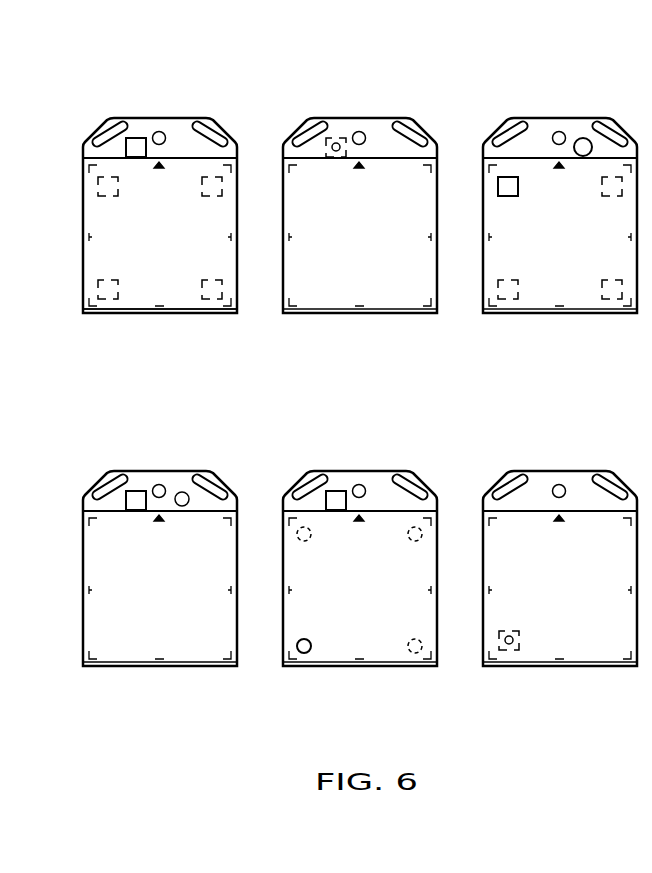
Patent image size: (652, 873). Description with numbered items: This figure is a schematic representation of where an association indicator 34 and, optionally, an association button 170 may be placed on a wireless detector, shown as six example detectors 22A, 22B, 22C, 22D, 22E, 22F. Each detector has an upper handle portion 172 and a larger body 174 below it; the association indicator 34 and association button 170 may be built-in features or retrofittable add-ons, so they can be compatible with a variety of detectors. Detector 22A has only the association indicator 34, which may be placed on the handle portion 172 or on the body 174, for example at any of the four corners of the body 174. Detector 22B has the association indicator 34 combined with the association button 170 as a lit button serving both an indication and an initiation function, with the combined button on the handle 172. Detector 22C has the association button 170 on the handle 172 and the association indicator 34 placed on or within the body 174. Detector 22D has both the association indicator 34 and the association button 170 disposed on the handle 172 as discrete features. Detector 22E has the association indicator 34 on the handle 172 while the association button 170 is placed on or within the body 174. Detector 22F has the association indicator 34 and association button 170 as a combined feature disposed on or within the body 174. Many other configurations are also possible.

The detector 22A is at (197, 107).
The detector 22B is at (392, 107).
The detector 22C is at (605, 107).
The detector 22D is at (68, 457).
The detector 22E is at (283, 457).
The detector 22F is at (485, 457).
The association indicator 34 is at (135, 138).
The association button 170 is at (330, 138).
The handle portion 172 is at (82, 153).
The body 174 is at (82, 267).